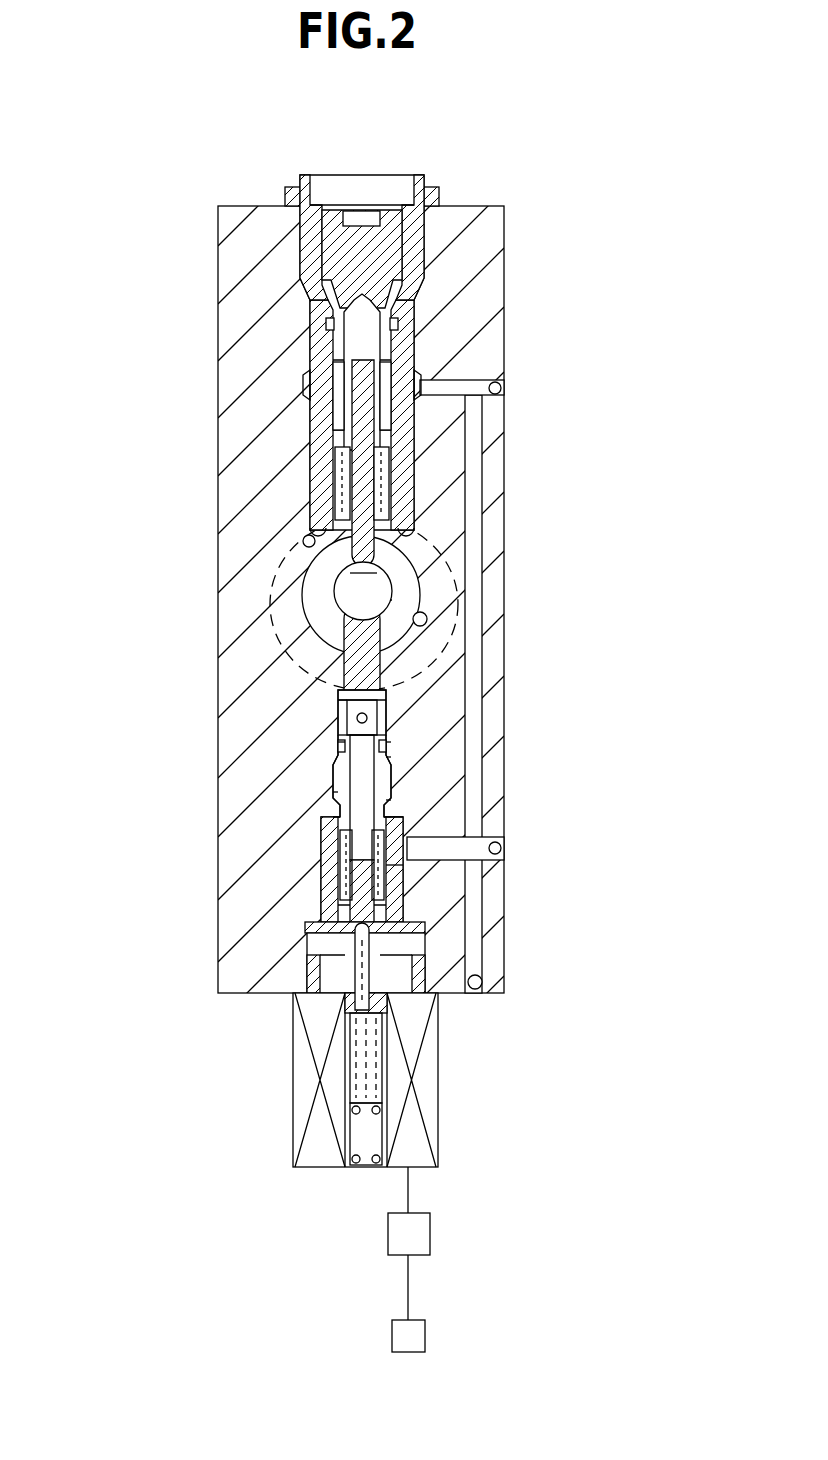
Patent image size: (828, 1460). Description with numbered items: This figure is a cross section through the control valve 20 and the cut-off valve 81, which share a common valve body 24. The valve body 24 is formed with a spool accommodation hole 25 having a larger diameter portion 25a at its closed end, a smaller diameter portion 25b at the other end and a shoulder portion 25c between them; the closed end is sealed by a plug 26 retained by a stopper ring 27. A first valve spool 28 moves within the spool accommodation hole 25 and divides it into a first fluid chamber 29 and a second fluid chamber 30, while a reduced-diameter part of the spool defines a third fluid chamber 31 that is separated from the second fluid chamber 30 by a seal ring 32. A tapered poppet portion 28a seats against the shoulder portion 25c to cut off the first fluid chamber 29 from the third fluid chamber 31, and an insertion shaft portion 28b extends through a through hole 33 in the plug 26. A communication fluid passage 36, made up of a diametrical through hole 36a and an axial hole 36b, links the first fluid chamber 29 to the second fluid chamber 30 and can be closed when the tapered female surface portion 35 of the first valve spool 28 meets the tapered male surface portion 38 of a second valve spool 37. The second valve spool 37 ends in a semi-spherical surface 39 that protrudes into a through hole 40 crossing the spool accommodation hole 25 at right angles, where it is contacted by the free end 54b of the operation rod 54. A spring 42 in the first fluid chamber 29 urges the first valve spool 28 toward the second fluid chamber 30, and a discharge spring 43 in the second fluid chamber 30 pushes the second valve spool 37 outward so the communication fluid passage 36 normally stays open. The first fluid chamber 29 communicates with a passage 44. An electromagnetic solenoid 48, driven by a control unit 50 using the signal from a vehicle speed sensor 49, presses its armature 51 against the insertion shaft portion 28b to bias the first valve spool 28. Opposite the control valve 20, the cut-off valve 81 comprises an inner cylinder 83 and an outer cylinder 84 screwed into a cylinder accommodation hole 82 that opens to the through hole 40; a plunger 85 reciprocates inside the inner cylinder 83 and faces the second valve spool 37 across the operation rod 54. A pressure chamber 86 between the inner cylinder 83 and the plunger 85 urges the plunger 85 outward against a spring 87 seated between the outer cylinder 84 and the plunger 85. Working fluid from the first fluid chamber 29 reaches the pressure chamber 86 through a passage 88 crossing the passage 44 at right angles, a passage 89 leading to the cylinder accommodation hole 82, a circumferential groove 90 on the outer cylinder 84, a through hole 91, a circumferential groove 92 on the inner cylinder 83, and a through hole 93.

The control valve 20 is at (414, 676).
The valve body 24 is at (245, 972).
The spool accommodation hole 25 is at (330, 850).
The larger diameter portion 25a is at (405, 822).
The smaller diameter portion 25b is at (398, 757).
The shoulder portion 25c is at (398, 800).
The plug 26 is at (482, 980).
The stopper ring 27 is at (420, 928).
The first valve spool 28 is at (358, 760).
The poppet portion 28a is at (333, 818).
The insertion shaft portion 28b is at (330, 910).
The first fluid chamber 29 is at (338, 872).
The second fluid chamber 30 is at (352, 720).
The third fluid chamber 31 is at (335, 792).
The seal ring 32 is at (340, 742).
The through hole 33 is at (345, 948).
The tapered female surface portion 35 is at (378, 718).
The communication fluid passage 36 is at (380, 775).
The diametrical through hole 36a is at (400, 872).
The axial hole 36b is at (393, 740).
The second valve spool 37 is at (350, 662).
The tapered male surface portion 38 is at (388, 695).
The semi-spherical surface 39 is at (338, 598).
The through hole 40 is at (400, 610).
The spring 42 is at (405, 893).
The discharge spring 43 is at (335, 700).
The passage 44 is at (500, 848).
The electromagnetic solenoid 48 is at (305, 1080).
The vehicle speed sensor 49 is at (425, 1336).
The control unit 50 is at (430, 1234).
The armature 51 is at (345, 998).
The operation rod 54 is at (484, 604).
The free end 54b is at (445, 578).
The cut-off valve 81 is at (414, 563).
The cylinder accommodation hole 82 is at (315, 563).
The inner cylinder 83 is at (385, 228).
The outer cylinder 84 is at (420, 265).
The plunger 85 is at (380, 550).
The pressure chamber 86 is at (415, 320).
The spring 87 is at (340, 462).
The passage 88 is at (478, 510).
The passage 89 is at (478, 385).
The circumferential groove 90 is at (312, 412).
The through hole 91 is at (318, 362).
The circumferential groove 92 is at (393, 357).
The through hole 93 is at (320, 322).